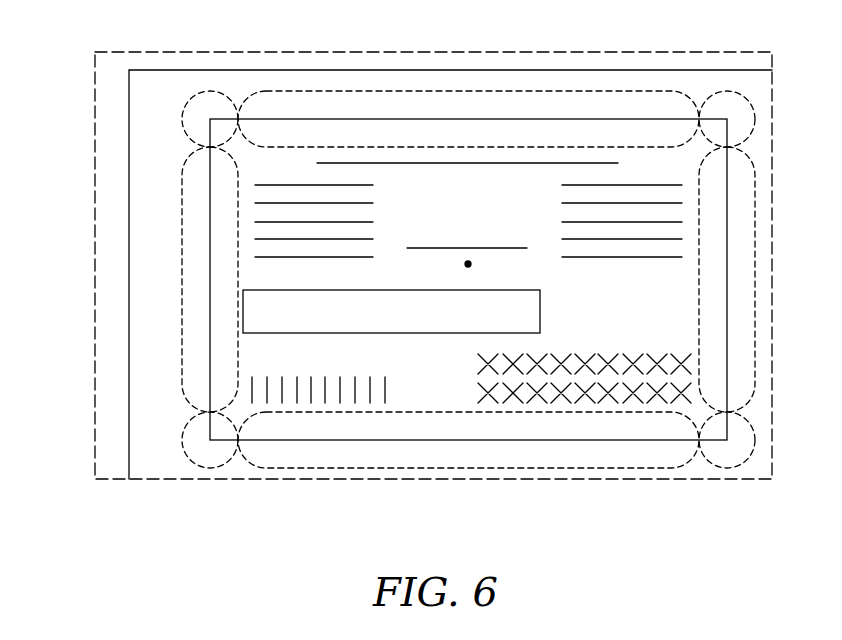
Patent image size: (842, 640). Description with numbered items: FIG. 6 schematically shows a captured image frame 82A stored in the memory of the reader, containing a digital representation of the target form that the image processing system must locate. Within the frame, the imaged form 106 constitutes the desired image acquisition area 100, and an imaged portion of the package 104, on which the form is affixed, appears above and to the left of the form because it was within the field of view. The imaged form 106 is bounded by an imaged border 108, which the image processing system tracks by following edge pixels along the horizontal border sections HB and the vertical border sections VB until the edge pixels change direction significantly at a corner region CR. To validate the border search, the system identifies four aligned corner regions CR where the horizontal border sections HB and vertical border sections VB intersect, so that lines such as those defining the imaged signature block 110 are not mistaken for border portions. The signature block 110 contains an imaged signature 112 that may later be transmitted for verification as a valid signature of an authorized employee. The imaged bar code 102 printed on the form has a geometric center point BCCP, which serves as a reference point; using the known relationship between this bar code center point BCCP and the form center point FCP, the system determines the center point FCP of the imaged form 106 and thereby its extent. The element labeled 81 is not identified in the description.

The captured image frame 82A is at (96, 264).
The package 104 is at (160, 101).
The desired image acquisition area 100 is at (208, 297).
The form 106 is at (208, 334).
The corner region CR is at (183, 116).
The horizontal border section HB is at (464, 91).
The vertical border section VB is at (182, 180).
The border 108 is at (727, 336).
The form center point FCP is at (468, 260).
The signature block 110 is at (540, 313).
The signature 112 is at (434, 291).
The bar code 102 is at (250, 387).
The bar code center point BCCP is at (325, 392).
The bottom edge 81 is at (562, 441).